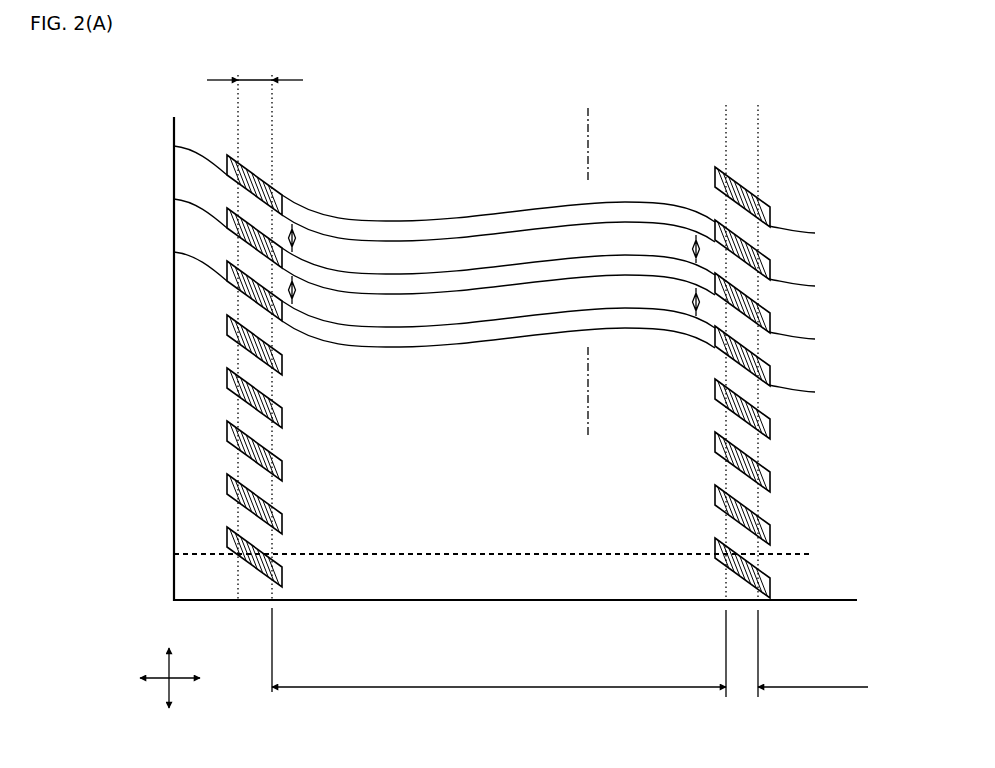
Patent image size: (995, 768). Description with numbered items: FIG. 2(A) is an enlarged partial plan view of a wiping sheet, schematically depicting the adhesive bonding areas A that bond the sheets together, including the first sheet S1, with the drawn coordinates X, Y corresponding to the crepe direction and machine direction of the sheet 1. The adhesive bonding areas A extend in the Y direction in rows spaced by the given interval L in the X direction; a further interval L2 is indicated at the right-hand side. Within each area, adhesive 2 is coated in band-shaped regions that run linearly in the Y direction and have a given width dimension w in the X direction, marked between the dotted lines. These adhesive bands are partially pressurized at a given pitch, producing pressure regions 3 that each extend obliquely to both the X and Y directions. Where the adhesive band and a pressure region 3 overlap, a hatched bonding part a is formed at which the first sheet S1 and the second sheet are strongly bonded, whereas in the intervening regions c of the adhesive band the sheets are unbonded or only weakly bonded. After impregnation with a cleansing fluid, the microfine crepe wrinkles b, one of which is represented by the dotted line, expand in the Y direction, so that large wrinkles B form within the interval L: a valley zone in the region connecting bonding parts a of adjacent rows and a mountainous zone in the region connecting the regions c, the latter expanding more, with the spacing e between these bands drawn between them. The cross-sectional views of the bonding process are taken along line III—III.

The base member 1 is at (160, 537).
The adhesive 2 is at (520, 337).
The pressure regions 3 is at (285, 522).
The bonding parts a is at (174, 252).
The crepe wrinkles b is at (812, 552).
The regions c is at (467, 261).
The spacing e is at (302, 287).
The adhesive bonding areas A is at (305, 418).
The large wrinkles B is at (421, 215).
The width dimension w is at (255, 63).
The interval L is at (499, 663).
The length L2 is at (813, 664).
The first sheet S1 is at (365, 601).
The line III— III is at (592, 427).
The X direction X is at (179, 681).
The Y direction Y is at (169, 665).